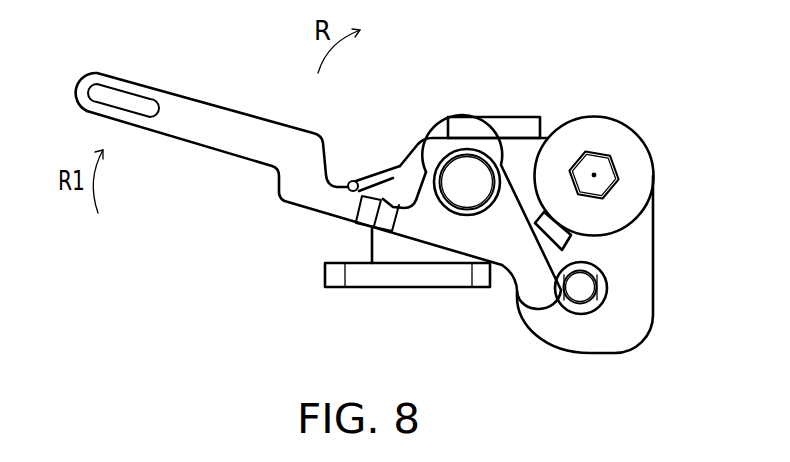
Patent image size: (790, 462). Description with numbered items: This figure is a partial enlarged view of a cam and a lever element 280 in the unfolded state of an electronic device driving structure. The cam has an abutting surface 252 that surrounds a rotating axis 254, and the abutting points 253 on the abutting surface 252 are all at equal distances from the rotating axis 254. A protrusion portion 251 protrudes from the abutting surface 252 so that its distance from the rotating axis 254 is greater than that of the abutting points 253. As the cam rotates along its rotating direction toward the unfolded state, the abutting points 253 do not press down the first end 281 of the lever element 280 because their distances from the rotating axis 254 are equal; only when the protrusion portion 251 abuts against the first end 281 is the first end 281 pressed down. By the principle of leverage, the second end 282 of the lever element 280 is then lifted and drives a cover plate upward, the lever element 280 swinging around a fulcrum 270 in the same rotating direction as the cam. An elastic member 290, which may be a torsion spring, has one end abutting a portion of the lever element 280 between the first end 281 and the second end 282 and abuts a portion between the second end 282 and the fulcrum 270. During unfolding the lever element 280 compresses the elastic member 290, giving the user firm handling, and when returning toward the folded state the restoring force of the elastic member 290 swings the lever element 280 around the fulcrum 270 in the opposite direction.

The second end 282 is at (200, 138).
The elastic member 290 is at (352, 180).
The lever element 280 is at (637, 108).
The abutting points 253 is at (528, 205).
The abutting surface 252 is at (535, 187).
The rotating axis 254 is at (596, 175).
The protrusion portion 251 is at (562, 235).
The fulcrum 270 is at (460, 177).
The first end 281 is at (540, 296).